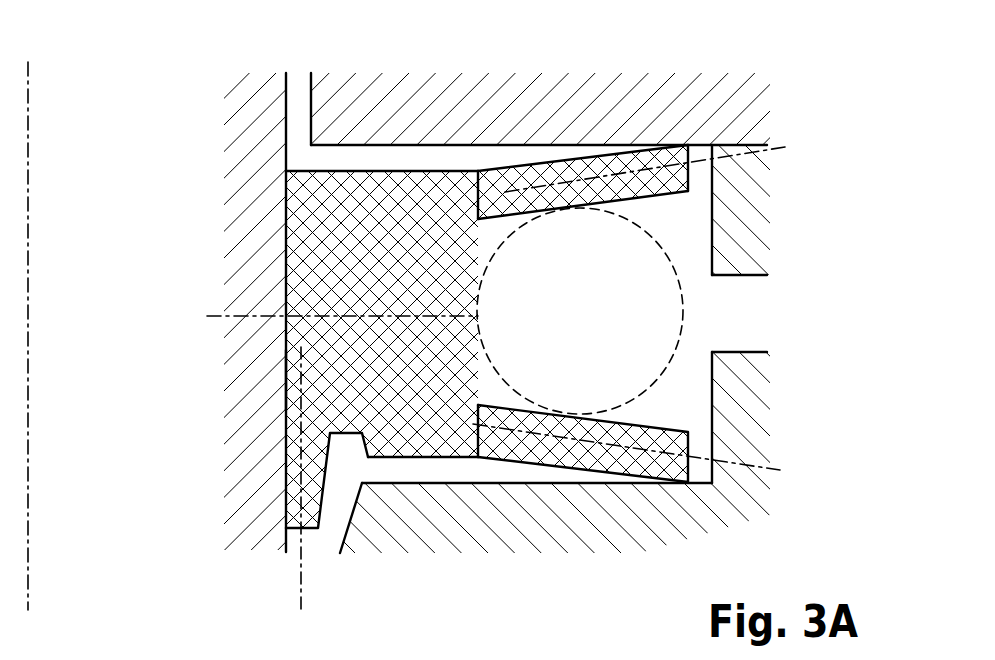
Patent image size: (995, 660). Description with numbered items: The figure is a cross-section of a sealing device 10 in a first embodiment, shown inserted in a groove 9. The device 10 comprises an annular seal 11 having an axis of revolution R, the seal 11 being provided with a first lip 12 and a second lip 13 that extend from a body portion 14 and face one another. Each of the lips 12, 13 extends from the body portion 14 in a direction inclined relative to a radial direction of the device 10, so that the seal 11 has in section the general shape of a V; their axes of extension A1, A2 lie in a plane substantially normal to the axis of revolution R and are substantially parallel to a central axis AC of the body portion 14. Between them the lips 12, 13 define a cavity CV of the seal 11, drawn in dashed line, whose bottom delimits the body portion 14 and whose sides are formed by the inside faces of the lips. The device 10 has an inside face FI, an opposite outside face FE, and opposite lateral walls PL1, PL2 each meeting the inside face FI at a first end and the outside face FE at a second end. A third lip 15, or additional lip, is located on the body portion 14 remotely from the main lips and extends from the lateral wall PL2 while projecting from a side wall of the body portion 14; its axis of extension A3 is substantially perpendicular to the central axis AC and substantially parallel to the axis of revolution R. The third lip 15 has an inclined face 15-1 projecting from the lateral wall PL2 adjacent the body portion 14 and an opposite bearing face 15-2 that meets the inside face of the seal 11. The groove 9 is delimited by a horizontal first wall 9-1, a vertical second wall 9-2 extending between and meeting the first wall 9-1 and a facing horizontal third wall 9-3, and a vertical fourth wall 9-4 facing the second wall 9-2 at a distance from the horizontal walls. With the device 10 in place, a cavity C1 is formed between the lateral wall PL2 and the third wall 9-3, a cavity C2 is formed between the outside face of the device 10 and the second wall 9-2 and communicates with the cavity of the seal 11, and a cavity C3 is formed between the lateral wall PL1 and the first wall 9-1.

The sealing device 10 is at (163, 163).
The groove 9 is at (712, 392).
The horizontal first wall 9-1 is at (533, 145).
The vertical second wall 9-2 is at (708, 435).
The horizontal third wall 9-3 is at (540, 480).
The vertical fourth wall 9-4 is at (286, 545).
The annular seal 11 is at (667, 146).
The first lip 12 is at (620, 167).
The second lip 13 is at (642, 463).
The body portion 14 is at (350, 287).
The third lip 15 is at (286, 485).
The inclined face 15-1 is at (325, 482).
The bearing face 15-2 is at (286, 445).
The cavity C1 is at (420, 468).
The cavity C2 is at (708, 328).
The cavity C3 is at (304, 147).
The lateral wall PL1 is at (442, 168).
The lateral wall PL2 is at (478, 450).
The outside face FE is at (690, 187).
The cavity CV is at (686, 287).
The central axis AC is at (319, 315).
The axis of extension A1 is at (667, 158).
The axis of extension A2 is at (645, 460).
The axis of extension A3 is at (288, 503).
The axis of revolution R is at (28, 318).
The inside face FI is at (286, 380).